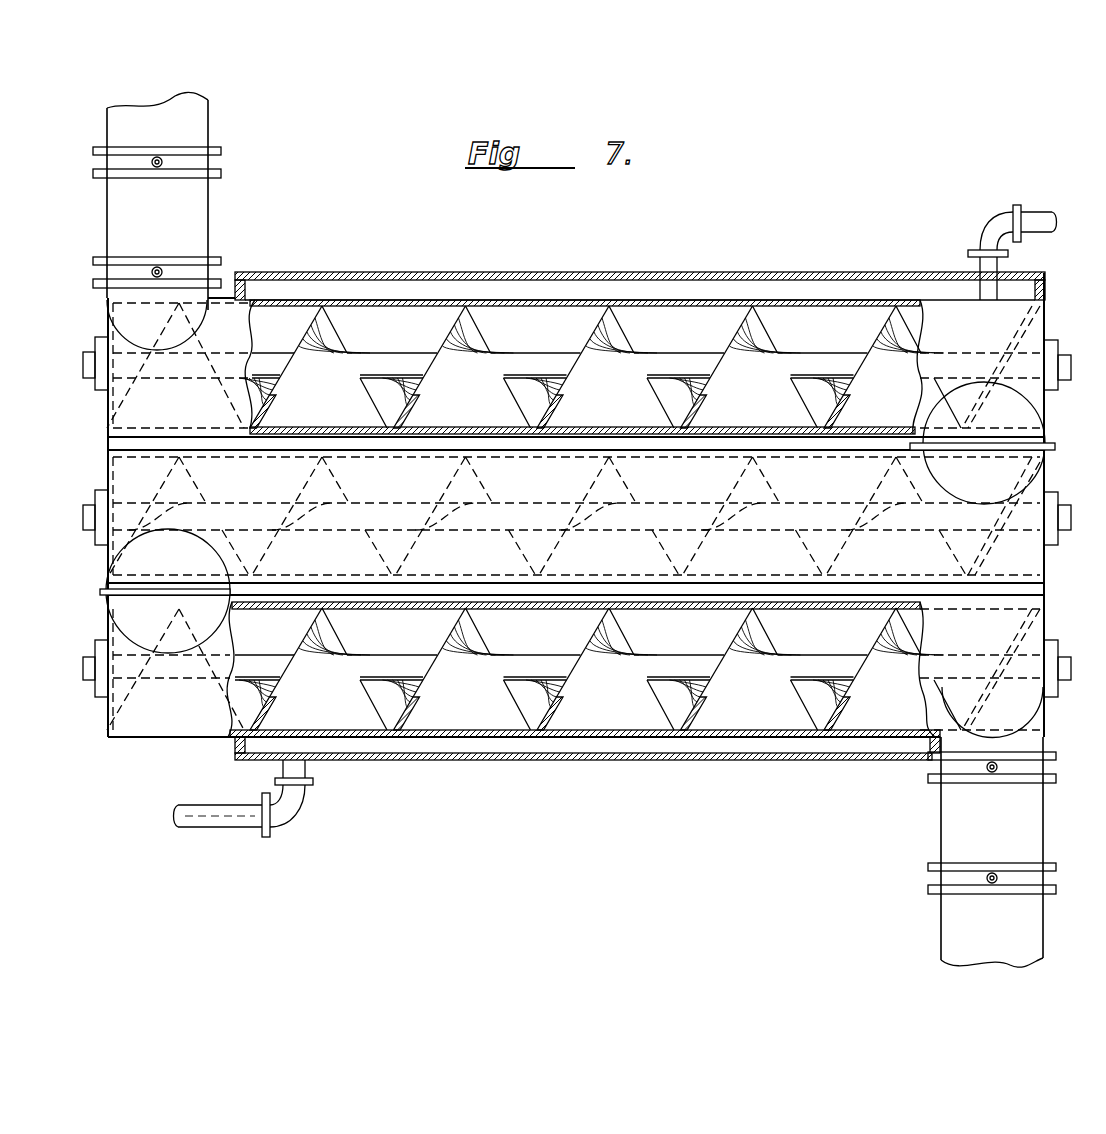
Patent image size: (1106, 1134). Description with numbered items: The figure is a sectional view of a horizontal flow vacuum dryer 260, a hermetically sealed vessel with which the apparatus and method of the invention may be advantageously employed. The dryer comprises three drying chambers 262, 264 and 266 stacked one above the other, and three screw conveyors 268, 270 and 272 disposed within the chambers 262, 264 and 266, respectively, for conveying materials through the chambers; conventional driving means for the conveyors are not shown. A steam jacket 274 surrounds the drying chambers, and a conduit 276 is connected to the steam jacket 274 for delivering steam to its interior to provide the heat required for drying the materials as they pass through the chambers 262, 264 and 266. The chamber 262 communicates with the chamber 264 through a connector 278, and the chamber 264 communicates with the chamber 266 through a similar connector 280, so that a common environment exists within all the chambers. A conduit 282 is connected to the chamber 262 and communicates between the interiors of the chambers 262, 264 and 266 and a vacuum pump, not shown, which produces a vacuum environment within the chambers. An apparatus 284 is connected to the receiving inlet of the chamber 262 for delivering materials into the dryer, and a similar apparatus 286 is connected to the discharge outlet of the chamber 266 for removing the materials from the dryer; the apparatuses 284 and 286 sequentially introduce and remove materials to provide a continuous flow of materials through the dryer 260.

The horizontal flow vacuum dryer 260 is at (761, 257).
The drying chamber 262 is at (517, 300).
The drying chamber 264 is at (113, 480).
The drying chamber 266 is at (620, 737).
The screw conveyor 268 is at (651, 364).
The screw conveyor 270 is at (699, 485).
The screw conveyor 272 is at (648, 662).
The steam jacket 274 is at (515, 760).
The conduit 276 is at (230, 826).
The connector 278 is at (936, 418).
The connector 280 is at (108, 580).
The conduit 282 is at (1026, 218).
The apparatus 284 is at (198, 230).
The apparatus 286 is at (948, 826).